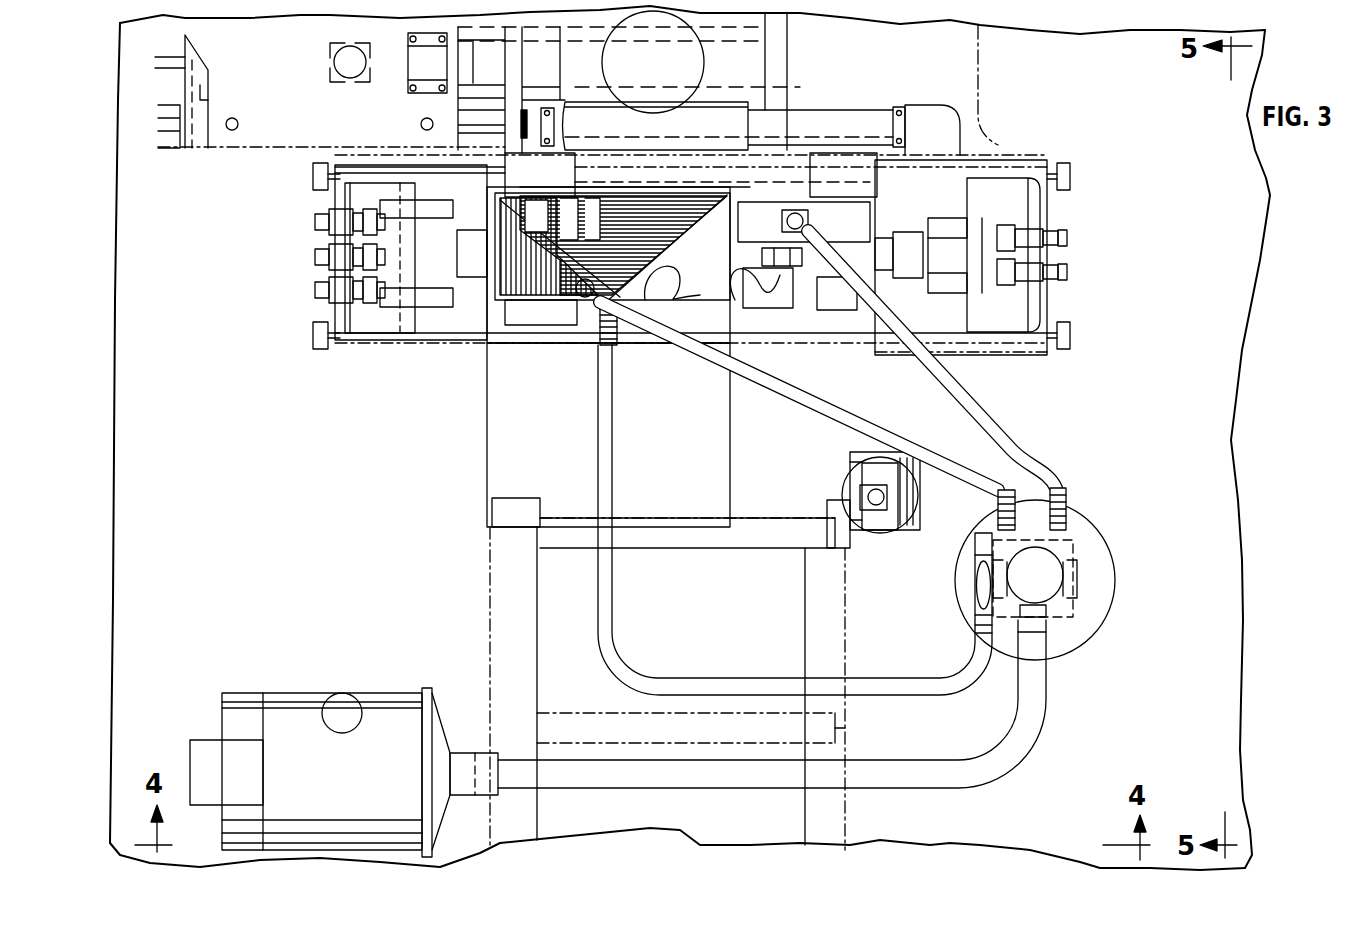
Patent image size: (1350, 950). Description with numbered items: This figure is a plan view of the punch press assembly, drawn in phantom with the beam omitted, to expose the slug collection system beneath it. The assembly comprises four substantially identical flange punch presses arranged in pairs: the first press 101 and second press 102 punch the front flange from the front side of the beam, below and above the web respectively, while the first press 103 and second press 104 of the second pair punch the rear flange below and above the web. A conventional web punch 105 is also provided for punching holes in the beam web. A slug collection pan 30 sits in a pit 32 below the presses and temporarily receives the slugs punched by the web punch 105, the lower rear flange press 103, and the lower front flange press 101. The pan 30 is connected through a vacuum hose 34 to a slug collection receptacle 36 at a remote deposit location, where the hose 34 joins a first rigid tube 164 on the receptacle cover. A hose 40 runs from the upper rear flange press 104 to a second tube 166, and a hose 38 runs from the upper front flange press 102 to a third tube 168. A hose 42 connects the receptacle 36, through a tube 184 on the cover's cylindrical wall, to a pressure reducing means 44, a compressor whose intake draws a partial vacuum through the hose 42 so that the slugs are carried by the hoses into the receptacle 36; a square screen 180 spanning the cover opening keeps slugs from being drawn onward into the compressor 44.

The slug collection pan 30 is at (700, 340).
The pit 32 is at (735, 338).
The vacuum hose 34 is at (610, 620).
The slug collection receptacle 36 is at (1105, 545).
The hose 38 is at (975, 412).
The hose 40 is at (858, 425).
The hose 42 is at (1042, 682).
The pressure reducing means 44 is at (385, 693).
The first punch press 101 is at (797, 255).
The second punch press 102 is at (777, 200).
The first punch press of the second pair 103 is at (650, 212).
The second punch press of the second pair 104 is at (600, 303).
The web punch 105 is at (683, 58).
The first rigid tube 164 is at (975, 620).
The second tube 166 is at (999, 530).
The third tube 168 is at (1075, 522).
The square screen 180 is at (1080, 556).
The tube 184 is at (1050, 612).